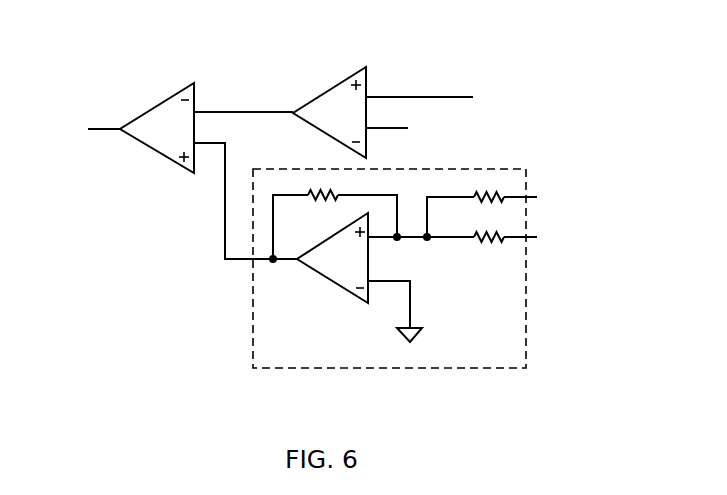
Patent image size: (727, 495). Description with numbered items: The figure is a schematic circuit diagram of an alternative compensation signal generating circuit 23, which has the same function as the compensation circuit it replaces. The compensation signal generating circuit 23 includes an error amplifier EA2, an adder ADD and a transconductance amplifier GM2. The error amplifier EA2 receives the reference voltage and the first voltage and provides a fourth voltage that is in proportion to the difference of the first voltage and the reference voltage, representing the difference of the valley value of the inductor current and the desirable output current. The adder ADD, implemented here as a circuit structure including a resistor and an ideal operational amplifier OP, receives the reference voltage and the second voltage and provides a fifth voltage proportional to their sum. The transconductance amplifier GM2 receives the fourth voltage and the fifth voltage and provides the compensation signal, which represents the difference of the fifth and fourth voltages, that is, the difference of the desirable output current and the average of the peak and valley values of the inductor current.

The compensation signal generating circuit 23 is at (579, 54).
The transconductance amplifier GM2 is at (190, 171).
The error amplifier EA2 is at (383, 112).
The ideal operational amplifier OP is at (347, 277).
The adder ADD is at (395, 289).